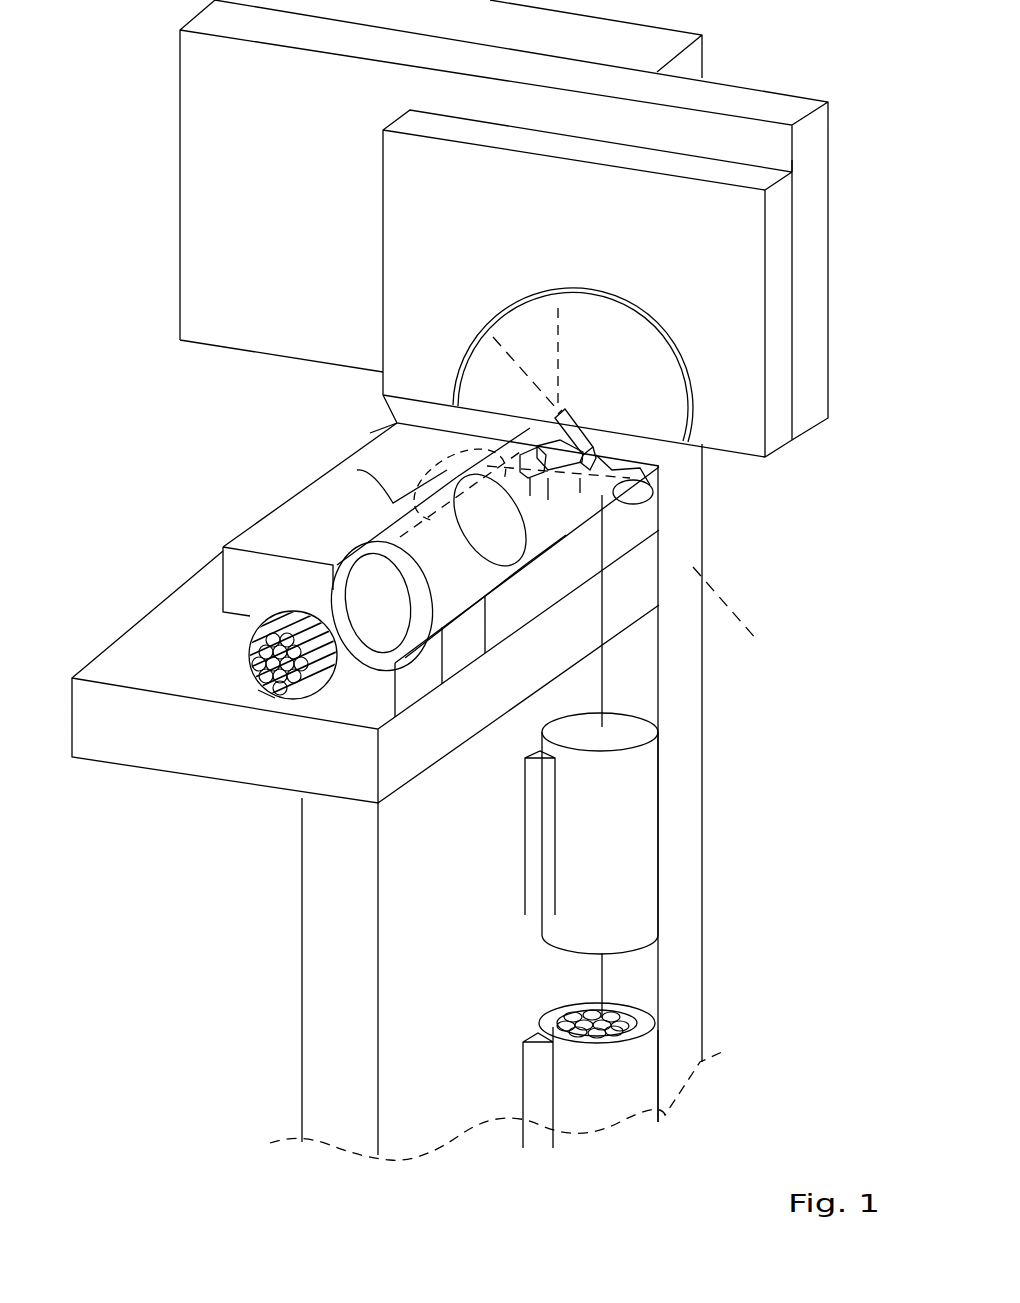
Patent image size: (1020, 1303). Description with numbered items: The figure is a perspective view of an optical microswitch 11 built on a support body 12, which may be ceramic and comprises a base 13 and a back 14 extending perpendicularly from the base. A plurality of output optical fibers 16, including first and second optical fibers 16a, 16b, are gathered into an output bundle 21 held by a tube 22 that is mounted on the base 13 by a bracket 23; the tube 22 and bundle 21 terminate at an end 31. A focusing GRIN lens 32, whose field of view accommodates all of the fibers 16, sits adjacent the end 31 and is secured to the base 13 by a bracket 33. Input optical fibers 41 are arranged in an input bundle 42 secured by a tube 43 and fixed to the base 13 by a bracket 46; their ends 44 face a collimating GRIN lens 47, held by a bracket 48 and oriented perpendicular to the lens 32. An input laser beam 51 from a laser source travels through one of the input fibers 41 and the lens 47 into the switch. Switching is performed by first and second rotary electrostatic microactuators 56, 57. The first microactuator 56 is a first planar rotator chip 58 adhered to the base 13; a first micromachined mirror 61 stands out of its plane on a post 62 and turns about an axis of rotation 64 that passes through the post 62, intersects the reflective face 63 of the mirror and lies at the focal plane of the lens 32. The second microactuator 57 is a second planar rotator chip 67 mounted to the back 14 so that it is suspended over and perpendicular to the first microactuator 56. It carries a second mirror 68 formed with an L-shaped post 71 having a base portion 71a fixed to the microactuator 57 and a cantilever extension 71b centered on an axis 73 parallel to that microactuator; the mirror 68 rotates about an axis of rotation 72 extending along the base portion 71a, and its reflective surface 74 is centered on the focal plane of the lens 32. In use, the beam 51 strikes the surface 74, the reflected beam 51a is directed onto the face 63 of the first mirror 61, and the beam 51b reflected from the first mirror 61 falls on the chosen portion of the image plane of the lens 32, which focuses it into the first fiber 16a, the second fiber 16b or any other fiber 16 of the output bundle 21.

The optical microswitch 11 is at (770, 62).
The support body 12 is at (840, 368).
The base 13 is at (72, 733).
The back 14 is at (180, 318).
The output optical fibers 16 is at (250, 652).
The first optical fiber 16a is at (262, 671).
The second optical fiber 16b is at (348, 637).
The bundle 21 is at (272, 700).
The tube 22 is at (270, 603).
The bracket 23 is at (352, 738).
The end 31 is at (413, 602).
The GRIN lens 32 is at (440, 492).
The bracket 33 is at (462, 652).
The input optical fibers 41 is at (632, 1018).
The bundle 42 is at (617, 1040).
The tube 43 is at (583, 1105).
The ends 44 is at (583, 1013).
The bracket 46 is at (540, 1118).
The GRIN lens 47 is at (640, 797).
The bracket 48 is at (537, 850).
The input laser beam 51 is at (603, 690).
The reflected beam 51a is at (580, 493).
The laser beam 51b is at (550, 510).
The first rotary electrostatic microactuator 56 is at (487, 473).
The second rotary electrostatic microactuator 57 is at (643, 320).
The first planar rotator chip 58 is at (395, 430).
The first micromachined mirror 61 is at (553, 437).
The post 62 is at (618, 508).
The reflective face 63 is at (522, 462).
The axis of rotation 64 is at (566, 318).
The second planar rotator chip 67 is at (782, 252).
The second mirror 68 is at (660, 480).
The L-shaped post 71 is at (582, 425).
The base portion 71a is at (565, 412).
The cantilever portion 71b is at (627, 438).
The axis of rotation 72 is at (400, 512).
The axis 73 is at (507, 330).
The reflective surface 74 is at (700, 545).